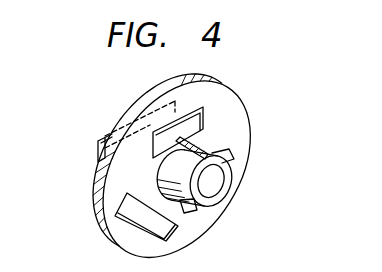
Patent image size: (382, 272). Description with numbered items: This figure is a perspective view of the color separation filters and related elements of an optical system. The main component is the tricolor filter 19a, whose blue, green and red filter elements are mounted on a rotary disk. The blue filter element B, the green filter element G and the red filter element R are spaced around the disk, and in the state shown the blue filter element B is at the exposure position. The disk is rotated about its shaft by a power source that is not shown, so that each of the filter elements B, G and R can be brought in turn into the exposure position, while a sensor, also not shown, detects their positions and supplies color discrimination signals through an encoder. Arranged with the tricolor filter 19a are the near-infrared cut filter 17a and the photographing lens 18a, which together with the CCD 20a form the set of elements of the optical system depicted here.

The tricolor filter 19a is at (228, 87).
The CCD 20a is at (97, 152).
The blue filter element B is at (204, 123).
The photographing lens 18a is at (233, 153).
The near-infrared cut filter 17a is at (228, 181).
The green filter element G is at (131, 222).
The red filter element R is at (205, 230).